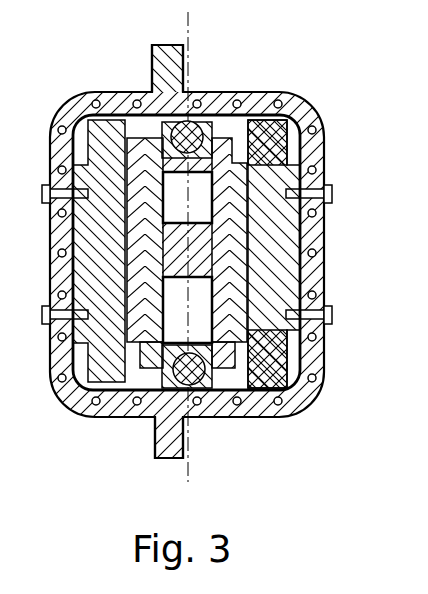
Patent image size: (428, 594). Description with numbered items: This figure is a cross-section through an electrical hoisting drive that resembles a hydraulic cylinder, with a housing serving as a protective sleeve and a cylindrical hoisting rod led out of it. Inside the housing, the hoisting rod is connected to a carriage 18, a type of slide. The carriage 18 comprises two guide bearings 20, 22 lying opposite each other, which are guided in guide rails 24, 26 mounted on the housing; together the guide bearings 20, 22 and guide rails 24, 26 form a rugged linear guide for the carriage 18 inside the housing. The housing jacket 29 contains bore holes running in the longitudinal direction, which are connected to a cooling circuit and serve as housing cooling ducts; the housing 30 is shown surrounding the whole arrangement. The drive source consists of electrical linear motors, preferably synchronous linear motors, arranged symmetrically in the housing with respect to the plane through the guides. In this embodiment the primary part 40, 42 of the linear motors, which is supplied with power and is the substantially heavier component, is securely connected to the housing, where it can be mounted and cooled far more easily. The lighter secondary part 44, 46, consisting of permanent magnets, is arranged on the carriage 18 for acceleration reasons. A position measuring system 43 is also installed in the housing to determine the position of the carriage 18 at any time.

The carriage 18 is at (208, 249).
The guide bearing 20 is at (214, 389).
The guide bearing 22 is at (212, 122).
The guide rail 24 is at (170, 418).
The guide rail 26 is at (176, 116).
The housing jacket 29 is at (311, 272).
The housing 30 is at (313, 388).
The primary part 40 is at (101, 283).
The primary part 42 is at (293, 333).
The position measuring system 43 is at (285, 133).
The secondary part 44 is at (136, 223).
The secondary part 46 is at (197, 232).